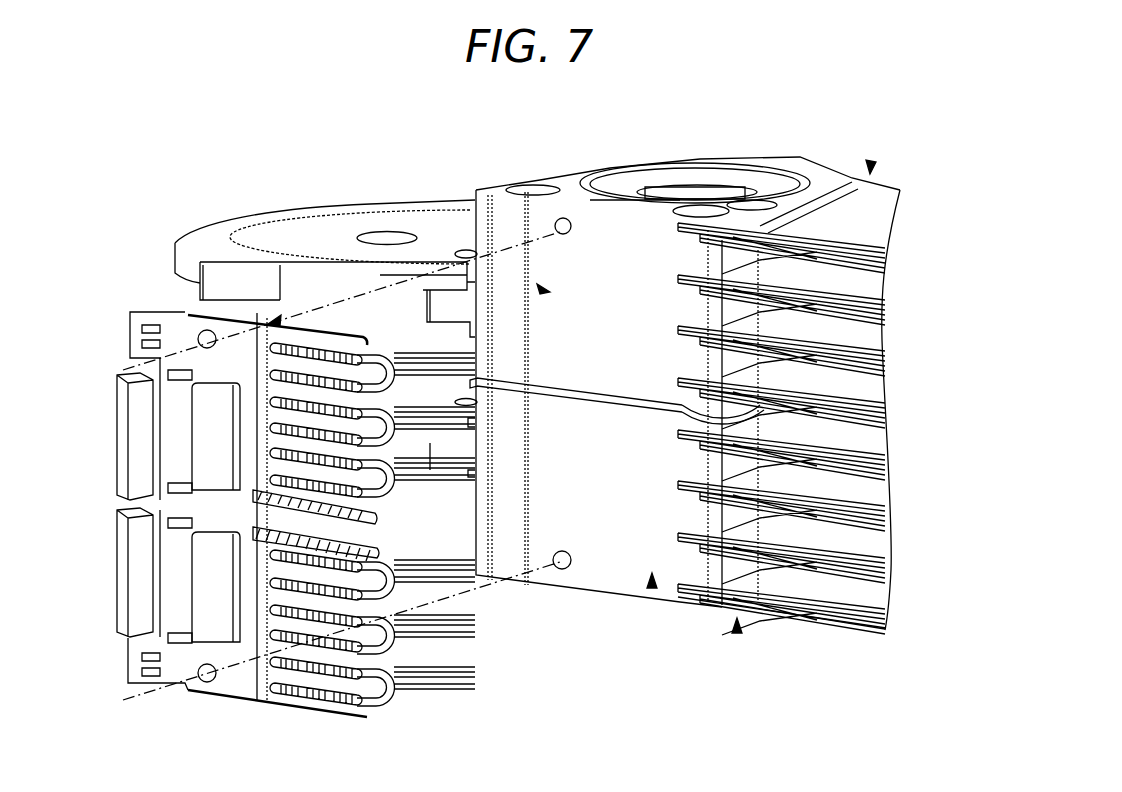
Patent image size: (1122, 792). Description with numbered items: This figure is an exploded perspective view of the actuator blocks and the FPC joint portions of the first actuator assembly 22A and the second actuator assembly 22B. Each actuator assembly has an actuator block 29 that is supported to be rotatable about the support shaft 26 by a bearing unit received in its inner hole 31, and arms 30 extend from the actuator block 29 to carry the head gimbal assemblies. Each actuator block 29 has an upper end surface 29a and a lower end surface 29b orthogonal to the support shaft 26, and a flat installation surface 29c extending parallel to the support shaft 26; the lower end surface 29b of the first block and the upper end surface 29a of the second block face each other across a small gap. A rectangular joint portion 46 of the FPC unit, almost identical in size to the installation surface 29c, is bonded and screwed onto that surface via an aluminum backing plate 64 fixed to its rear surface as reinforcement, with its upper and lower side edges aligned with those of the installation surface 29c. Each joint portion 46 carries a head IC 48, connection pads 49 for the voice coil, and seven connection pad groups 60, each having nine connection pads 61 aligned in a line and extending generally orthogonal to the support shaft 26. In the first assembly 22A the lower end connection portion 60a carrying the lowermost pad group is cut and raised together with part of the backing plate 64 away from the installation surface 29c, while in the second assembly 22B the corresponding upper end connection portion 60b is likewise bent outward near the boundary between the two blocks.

The first actuator assembly 22A is at (870, 165).
The second actuator assembly 22B is at (737, 632).
The support shaft 26 is at (694, 193).
The actuator block 29 is at (548, 291).
The upper end surface 29a is at (568, 184).
The lower end surface 29b is at (620, 403).
The installation surface 29c is at (622, 237).
The arms 30 is at (858, 345).
The inner hole 31 is at (750, 182).
The joint portion 46 is at (243, 340).
The head IC 48 is at (217, 383).
The connection pads 49 is at (151, 330).
The connection pad groups 60 is at (283, 335).
The lower end connection portion 60a is at (383, 508).
The upper end connection portion 60b is at (377, 553).
The connection pads 61 is at (347, 370).
The backing plate 64 is at (373, 335).